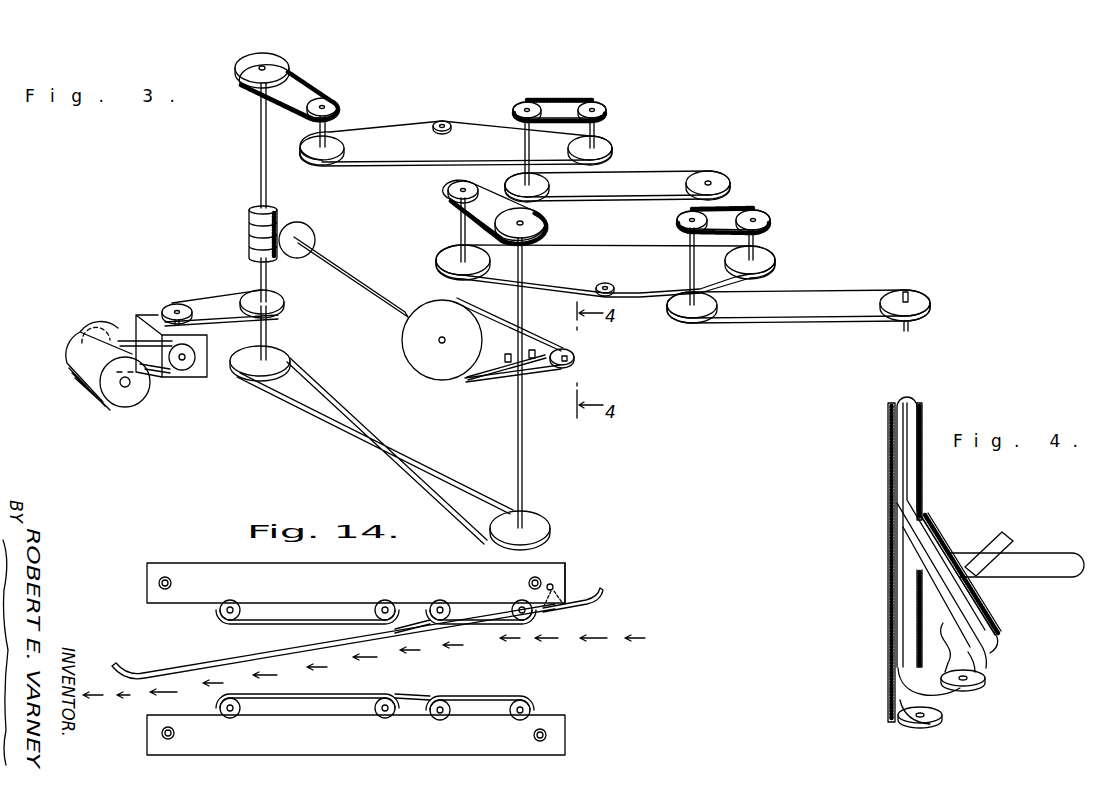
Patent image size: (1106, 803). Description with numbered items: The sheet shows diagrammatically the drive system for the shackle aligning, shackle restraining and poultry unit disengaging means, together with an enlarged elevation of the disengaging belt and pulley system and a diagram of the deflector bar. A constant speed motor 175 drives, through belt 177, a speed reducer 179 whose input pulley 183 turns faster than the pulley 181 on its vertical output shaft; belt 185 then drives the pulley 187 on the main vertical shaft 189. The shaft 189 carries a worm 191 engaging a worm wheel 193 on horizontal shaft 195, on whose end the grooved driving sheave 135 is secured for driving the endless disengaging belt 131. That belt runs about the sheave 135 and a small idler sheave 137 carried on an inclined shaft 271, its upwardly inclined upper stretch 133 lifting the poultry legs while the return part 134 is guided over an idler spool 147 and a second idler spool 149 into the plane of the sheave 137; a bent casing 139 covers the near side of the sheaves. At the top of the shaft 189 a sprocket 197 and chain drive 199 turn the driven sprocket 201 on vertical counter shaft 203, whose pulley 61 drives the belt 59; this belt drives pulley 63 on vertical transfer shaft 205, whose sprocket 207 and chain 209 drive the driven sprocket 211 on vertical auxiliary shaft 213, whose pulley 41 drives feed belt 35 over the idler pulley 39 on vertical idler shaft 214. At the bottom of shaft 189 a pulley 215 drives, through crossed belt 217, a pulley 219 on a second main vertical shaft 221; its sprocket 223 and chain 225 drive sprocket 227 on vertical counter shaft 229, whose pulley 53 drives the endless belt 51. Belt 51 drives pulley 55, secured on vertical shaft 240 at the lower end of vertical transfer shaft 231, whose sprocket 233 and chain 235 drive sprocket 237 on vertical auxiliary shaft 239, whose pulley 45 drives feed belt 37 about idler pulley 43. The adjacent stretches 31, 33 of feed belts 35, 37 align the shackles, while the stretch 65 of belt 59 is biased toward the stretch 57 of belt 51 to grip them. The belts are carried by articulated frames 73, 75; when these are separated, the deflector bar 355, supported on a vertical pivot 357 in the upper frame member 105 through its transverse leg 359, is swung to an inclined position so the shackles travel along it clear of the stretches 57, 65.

In FIG. 3, the stretch 31 is at (609, 199).
In FIG. 14, the stretch 31 is at (486, 630).
In FIG. 3, the stretch 33 is at (859, 283).
In FIG. 14, the stretch 33 is at (485, 700).
In FIG. 3, the feed belt 35 is at (649, 173).
In FIG. 3, the feed belt 37 is at (828, 326).
In FIG. 3, the idler pulley 39 is at (723, 189).
In FIG. 3, the pulley 41 is at (505, 180).
In FIG. 3, the idler pulley 43 is at (921, 306).
In FIG. 3, the pulley 45 is at (681, 318).
In FIG. 3, the endless belt 51 is at (538, 292).
In FIG. 3, the V-groove pulley 53 is at (448, 269).
In FIG. 3, the V-groove pulley 55 is at (767, 264).
In FIG. 3, the stretch 57 is at (606, 243).
In FIG. 14, the stretch 57 is at (318, 698).
In FIG. 3, the belt 59 is at (487, 127).
In FIG. 3, the pulley 61 is at (314, 163).
In FIG. 3, the pulley 63 is at (603, 143).
In FIG. 3, the stretch 65 is at (394, 166).
In FIG. 14, the stretch 65 is at (298, 628).
In FIG. 14, the frame 73 is at (139, 742).
In FIG. 14, the frame 75 is at (139, 581).
In FIG. 14, the channel member 105 is at (567, 565).
In FIG. 3, the endless belt 131 is at (476, 381).
In FIG. 4, the endless belt 131 is at (964, 697).
In FIG. 3, the upper stretch 133 is at (541, 340).
In FIG. 4, the return part 134 is at (988, 670).
In FIG. 3, the driving sheave 135 is at (418, 352).
In FIG. 4, the driving sheave 135 is at (900, 608).
In FIG. 3, the idler sheave 137 is at (574, 356).
In FIG. 4, the idler sheave 137 is at (993, 614).
In FIG. 4, the casing 139 is at (906, 478).
In FIG. 3, the idler spool 147 is at (510, 364).
In FIG. 4, the idler spool 147 is at (940, 720).
In FIG. 3, the idler spool 149 is at (532, 360).
In FIG. 4, the idler spool 149 is at (985, 690).
In FIG. 3, the motor 175 is at (132, 398).
In FIG. 3, the belt 177 is at (157, 382).
In FIG. 3, the speed reducer 179 is at (142, 312).
In FIG. 3, the pulley 181 is at (178, 303).
In FIG. 3, the input pulley 183 is at (190, 365).
In FIG. 3, the belt 185 is at (222, 292).
In FIG. 3, the pulley 187 is at (281, 302).
In FIG. 3, the main vertical shaft 189 is at (259, 161).
In FIG. 3, the worm 191 is at (249, 237).
In FIG. 3, the worm wheel 193 is at (316, 234).
In FIG. 3, the horizontal shaft 195 is at (334, 261).
In FIG. 3, the sprocket 197 is at (270, 58).
In FIG. 3, the chain drive 199 is at (307, 81).
In FIG. 3, the driven sprocket 201 is at (335, 103).
In FIG. 3, the vertical counter shaft 203 is at (328, 126).
In FIG. 3, the vertical transfer shaft 205 is at (600, 128).
In FIG. 3, the sprocket 207 is at (600, 103).
In FIG. 3, the chain 209 is at (572, 100).
In FIG. 3, the driven sprocket 211 is at (527, 101).
In FIG. 3, the vertical auxiliary shaft 213 is at (523, 149).
In FIG. 3, the vertical idler shaft 214 is at (709, 179).
In FIG. 3, the pulley 215 is at (279, 357).
In FIG. 3, the crossed belt 217 is at (345, 412).
In FIG. 3, the pulley 219 is at (535, 528).
In FIG. 3, the second main vertical shaft 221 is at (523, 456).
In FIG. 3, the sprocket 223 is at (535, 224).
In FIG. 3, the chain 225 is at (455, 243).
In FIG. 3, the sprocket 227 is at (450, 198).
In FIG. 3, the vertical counter shaft 229 is at (460, 235).
In FIG. 3, the vertical transfer shaft 231 is at (760, 248).
In FIG. 3, the sprocket 233 is at (771, 220).
In FIG. 3, the chain 235 is at (742, 213).
In FIG. 3, the sprocket 237 is at (678, 223).
In FIG. 3, the vertical auxiliary shaft 239 is at (690, 271).
In FIG. 3, the vertical shaft 240 is at (907, 292).
In FIG. 3, the shaft 271 is at (566, 362).
In FIG. 14, the deflector bar 355 is at (207, 662).
In FIG. 14, the vertical pivot 357 is at (553, 584).
In FIG. 14, the transverse leg 359 is at (556, 587).